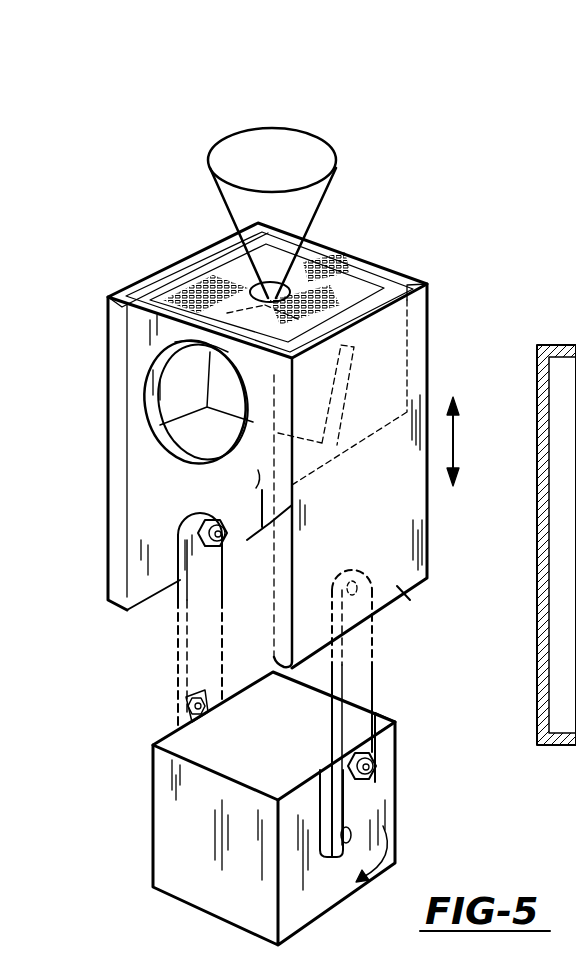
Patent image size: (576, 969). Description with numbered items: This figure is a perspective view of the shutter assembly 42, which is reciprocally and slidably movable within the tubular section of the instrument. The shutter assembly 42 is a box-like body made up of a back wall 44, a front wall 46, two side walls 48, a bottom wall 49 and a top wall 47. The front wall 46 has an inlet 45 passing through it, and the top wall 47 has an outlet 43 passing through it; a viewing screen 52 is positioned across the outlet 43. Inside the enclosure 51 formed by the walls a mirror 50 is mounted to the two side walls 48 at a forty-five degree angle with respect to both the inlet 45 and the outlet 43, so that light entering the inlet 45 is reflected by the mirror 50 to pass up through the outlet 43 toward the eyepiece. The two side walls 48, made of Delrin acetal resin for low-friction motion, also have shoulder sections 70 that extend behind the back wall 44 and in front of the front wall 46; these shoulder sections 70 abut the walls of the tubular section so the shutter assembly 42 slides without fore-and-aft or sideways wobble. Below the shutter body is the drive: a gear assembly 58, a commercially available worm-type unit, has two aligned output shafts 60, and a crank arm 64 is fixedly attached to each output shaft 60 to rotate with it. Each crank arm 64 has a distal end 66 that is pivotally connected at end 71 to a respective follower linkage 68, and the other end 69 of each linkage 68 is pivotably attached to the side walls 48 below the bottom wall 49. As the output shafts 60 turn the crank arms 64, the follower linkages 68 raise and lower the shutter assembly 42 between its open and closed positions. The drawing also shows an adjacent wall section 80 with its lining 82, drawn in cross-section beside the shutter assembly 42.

The shutter assembly 42 is at (407, 238).
The outlet 43 is at (328, 262).
The back wall 44 is at (390, 272).
The inlet 45 is at (150, 407).
The front wall 46 is at (256, 484).
The top wall 47 is at (358, 265).
The side walls 48 is at (412, 490).
The bottom wall 49 is at (207, 433).
The mirror 50 is at (217, 380).
The enclosure 51 is at (178, 342).
The viewing screen 52 is at (183, 298).
The gear assembly 58 is at (388, 772).
The output shafts 60 is at (340, 855).
The crank arm 64 is at (223, 648).
The distal end 66 is at (190, 702).
The follower linkage 68 is at (222, 585).
The linkage end 69 is at (197, 512).
The shoulder sections 70 is at (262, 228).
The linkage end 71 is at (185, 712).
The wall section 80 is at (548, 512).
The wall lining 82 is at (556, 545).